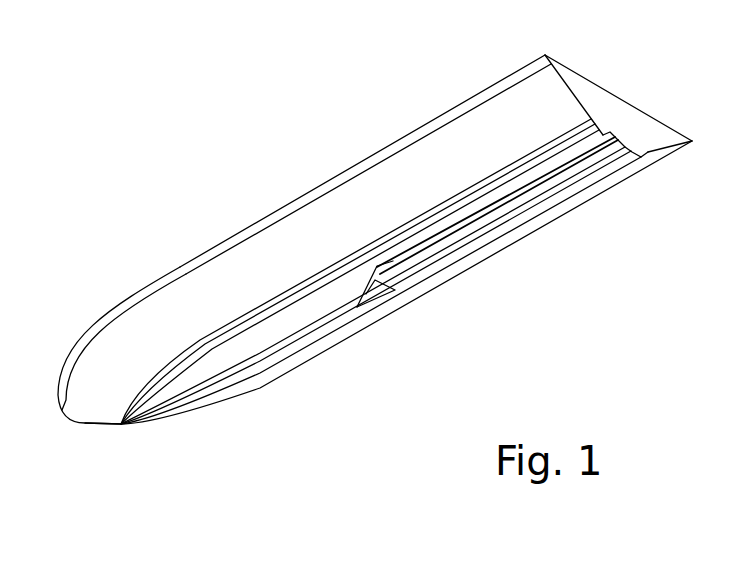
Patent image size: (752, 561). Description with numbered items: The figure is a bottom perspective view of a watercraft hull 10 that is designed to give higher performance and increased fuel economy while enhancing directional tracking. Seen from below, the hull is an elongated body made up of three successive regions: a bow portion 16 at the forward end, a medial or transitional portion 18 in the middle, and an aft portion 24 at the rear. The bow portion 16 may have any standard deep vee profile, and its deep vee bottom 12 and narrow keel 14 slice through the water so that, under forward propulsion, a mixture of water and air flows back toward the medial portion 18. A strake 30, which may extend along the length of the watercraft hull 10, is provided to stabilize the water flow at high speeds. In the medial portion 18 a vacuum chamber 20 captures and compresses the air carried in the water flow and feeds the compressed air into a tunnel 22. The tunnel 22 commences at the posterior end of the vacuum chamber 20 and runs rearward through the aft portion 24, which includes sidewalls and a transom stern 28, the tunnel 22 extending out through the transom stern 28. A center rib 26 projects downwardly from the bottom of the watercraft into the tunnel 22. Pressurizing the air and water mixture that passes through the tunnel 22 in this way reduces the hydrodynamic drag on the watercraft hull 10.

The watercraft hull 10 is at (92, 322).
The deep vee bottom 12 is at (287, 323).
The narrow keel 14 is at (220, 383).
The bow portion 16 is at (193, 277).
The medial portion 18 is at (358, 185).
The vacuum chamber 20 is at (392, 287).
The tunnel 22 is at (450, 247).
The aft portion 24 is at (553, 90).
The center rib 26 is at (613, 138).
The transom stern 28 is at (615, 103).
The strake 30 is at (128, 427).